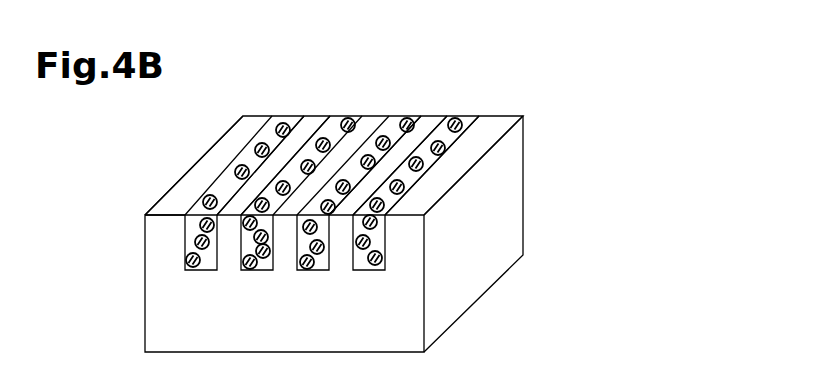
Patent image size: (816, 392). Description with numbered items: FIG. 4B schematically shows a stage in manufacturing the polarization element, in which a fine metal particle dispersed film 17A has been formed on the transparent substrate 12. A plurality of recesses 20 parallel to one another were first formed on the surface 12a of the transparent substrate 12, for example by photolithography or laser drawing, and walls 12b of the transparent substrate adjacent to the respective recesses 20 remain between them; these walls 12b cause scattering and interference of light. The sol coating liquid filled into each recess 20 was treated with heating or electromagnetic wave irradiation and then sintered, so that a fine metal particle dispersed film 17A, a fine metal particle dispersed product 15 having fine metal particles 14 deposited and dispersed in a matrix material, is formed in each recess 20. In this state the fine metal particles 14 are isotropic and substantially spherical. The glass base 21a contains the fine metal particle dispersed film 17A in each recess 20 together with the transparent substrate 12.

The transparent substrate 12 is at (152, 297).
The surface of the transparent substrate 12a is at (165, 214).
The walls of the transparent substrate 12b is at (278, 143).
The fine metal particles 14 is at (250, 165).
The fine metal particle dispersed product 15 is at (224, 183).
The fine metal particle dispersed film 17A is at (343, 105).
The recesses 20 is at (205, 270).
The glass base 21a is at (540, 88).